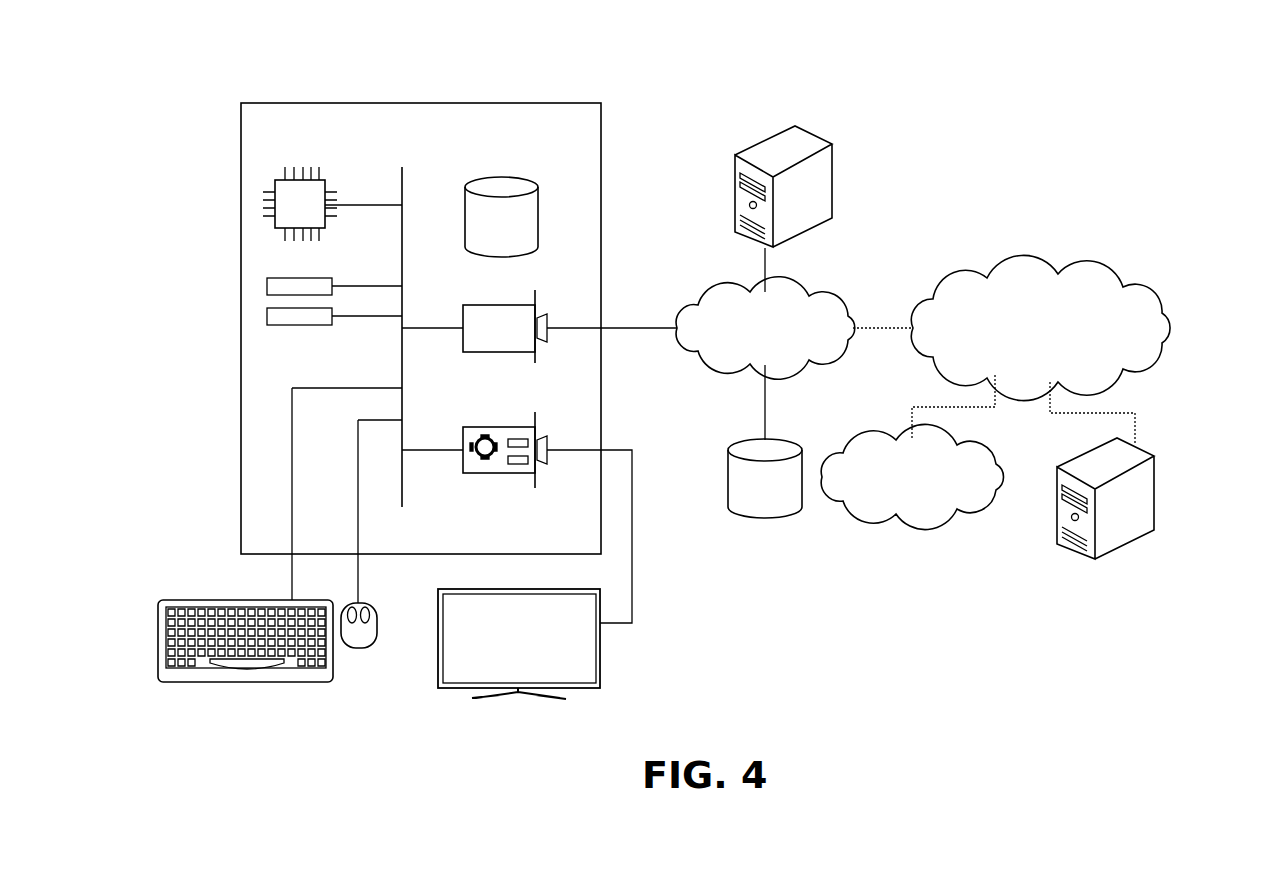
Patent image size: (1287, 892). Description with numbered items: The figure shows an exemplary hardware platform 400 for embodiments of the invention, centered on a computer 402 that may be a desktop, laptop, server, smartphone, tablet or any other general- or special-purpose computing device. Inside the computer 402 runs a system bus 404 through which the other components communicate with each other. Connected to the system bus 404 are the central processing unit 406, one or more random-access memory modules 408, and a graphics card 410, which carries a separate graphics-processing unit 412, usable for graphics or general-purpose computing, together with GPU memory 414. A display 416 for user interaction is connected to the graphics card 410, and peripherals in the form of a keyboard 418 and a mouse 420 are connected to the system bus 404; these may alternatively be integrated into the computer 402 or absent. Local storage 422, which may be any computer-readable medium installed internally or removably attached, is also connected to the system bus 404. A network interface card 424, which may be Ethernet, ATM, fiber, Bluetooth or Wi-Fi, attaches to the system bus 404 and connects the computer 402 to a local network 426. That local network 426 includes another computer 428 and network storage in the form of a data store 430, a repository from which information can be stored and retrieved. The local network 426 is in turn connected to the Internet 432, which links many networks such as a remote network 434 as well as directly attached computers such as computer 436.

The computing system 400 is at (1186, 154).
The computer 402 is at (551, 104).
The system bus 404 is at (402, 180).
The central processing unit 406 is at (323, 178).
The random-access memory modules 408 is at (334, 288).
The graphics card 410 is at (463, 435).
The graphics-processing unit 412 is at (485, 457).
The GPU memory 414 is at (518, 466).
The display 416 is at (601, 670).
The keyboard 418 is at (247, 682).
The mouse 420 is at (358, 649).
The local storage 422 is at (540, 215).
The network interface card 424 is at (463, 313).
The local network 426 is at (805, 294).
The computer 428 is at (812, 134).
The data store 430 is at (793, 443).
The Internet 432 is at (1093, 283).
The remote network 434 is at (950, 444).
The computer 436 is at (1155, 492).